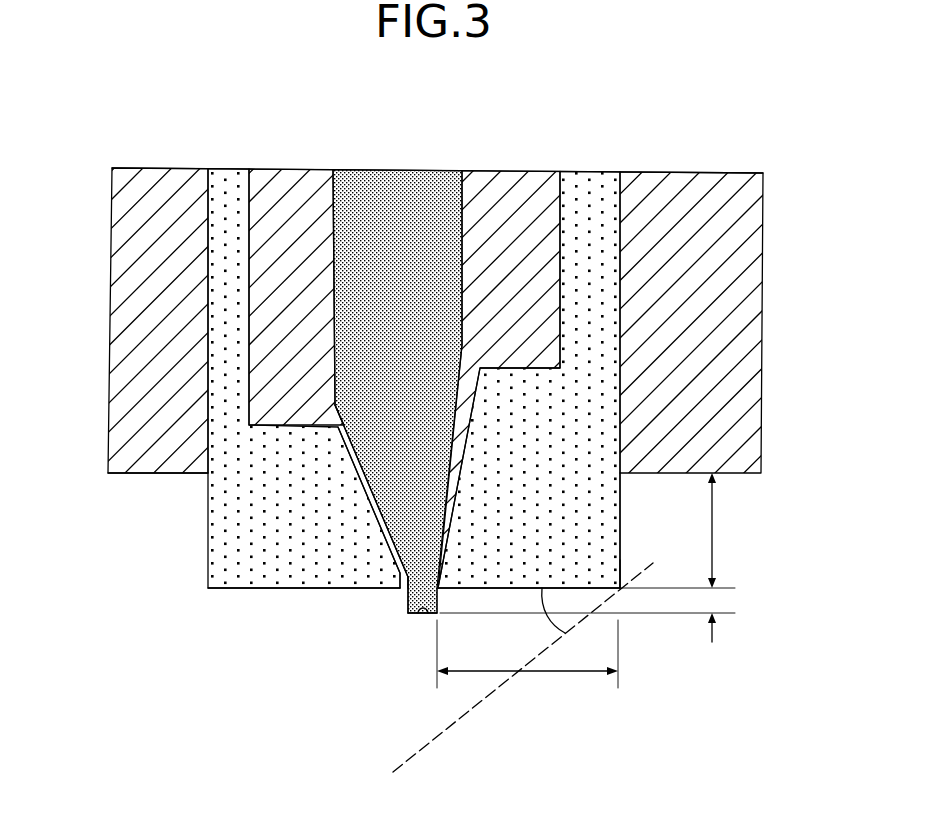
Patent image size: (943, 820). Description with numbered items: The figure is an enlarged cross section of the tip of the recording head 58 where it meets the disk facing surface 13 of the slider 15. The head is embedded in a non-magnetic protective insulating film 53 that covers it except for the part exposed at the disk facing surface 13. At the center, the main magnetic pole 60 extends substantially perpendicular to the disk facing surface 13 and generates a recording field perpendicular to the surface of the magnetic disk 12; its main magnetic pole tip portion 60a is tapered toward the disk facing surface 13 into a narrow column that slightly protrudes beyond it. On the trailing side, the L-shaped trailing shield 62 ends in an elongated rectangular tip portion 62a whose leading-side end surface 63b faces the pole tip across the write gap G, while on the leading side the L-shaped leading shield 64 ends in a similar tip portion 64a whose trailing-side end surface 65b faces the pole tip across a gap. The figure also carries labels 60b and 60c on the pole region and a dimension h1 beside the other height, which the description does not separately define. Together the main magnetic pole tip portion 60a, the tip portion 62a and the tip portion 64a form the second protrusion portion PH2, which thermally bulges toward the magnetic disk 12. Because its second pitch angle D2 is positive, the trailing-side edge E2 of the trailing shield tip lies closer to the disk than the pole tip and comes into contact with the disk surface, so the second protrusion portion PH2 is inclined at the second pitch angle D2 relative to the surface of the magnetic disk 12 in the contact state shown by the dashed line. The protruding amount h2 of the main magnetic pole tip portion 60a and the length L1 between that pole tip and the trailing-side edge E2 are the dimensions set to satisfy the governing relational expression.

The recording head 58 is at (454, 134).
The main magnetic pole 60 is at (443, 330).
The main magnetic pole tip portion 60a is at (405, 614).
The nozzle opening 60b is at (433, 613).
The nozzle side surface 60c is at (407, 600).
The trailing shield 62 is at (595, 237).
The tip portion 62a is at (578, 406).
The leading-side end surface 63b is at (458, 488).
The protective insulating film 53 is at (745, 345).
The slider 15 is at (135, 302).
The disk facing surface 13 is at (145, 473).
The leading shield 64 is at (230, 394).
The tip portion 64a is at (228, 571).
The trailing-side end surface 65b is at (370, 500).
The write gap G is at (438, 590).
The height h1 is at (716, 530).
The protruding amount h2 is at (716, 600).
The length L1 is at (578, 672).
The second pitch angle D2 is at (542, 590).
The trailing-side edge E2 is at (622, 590).
The magnetic disk 12 is at (482, 702).
The second protrusion portion PH2 is at (197, 604).